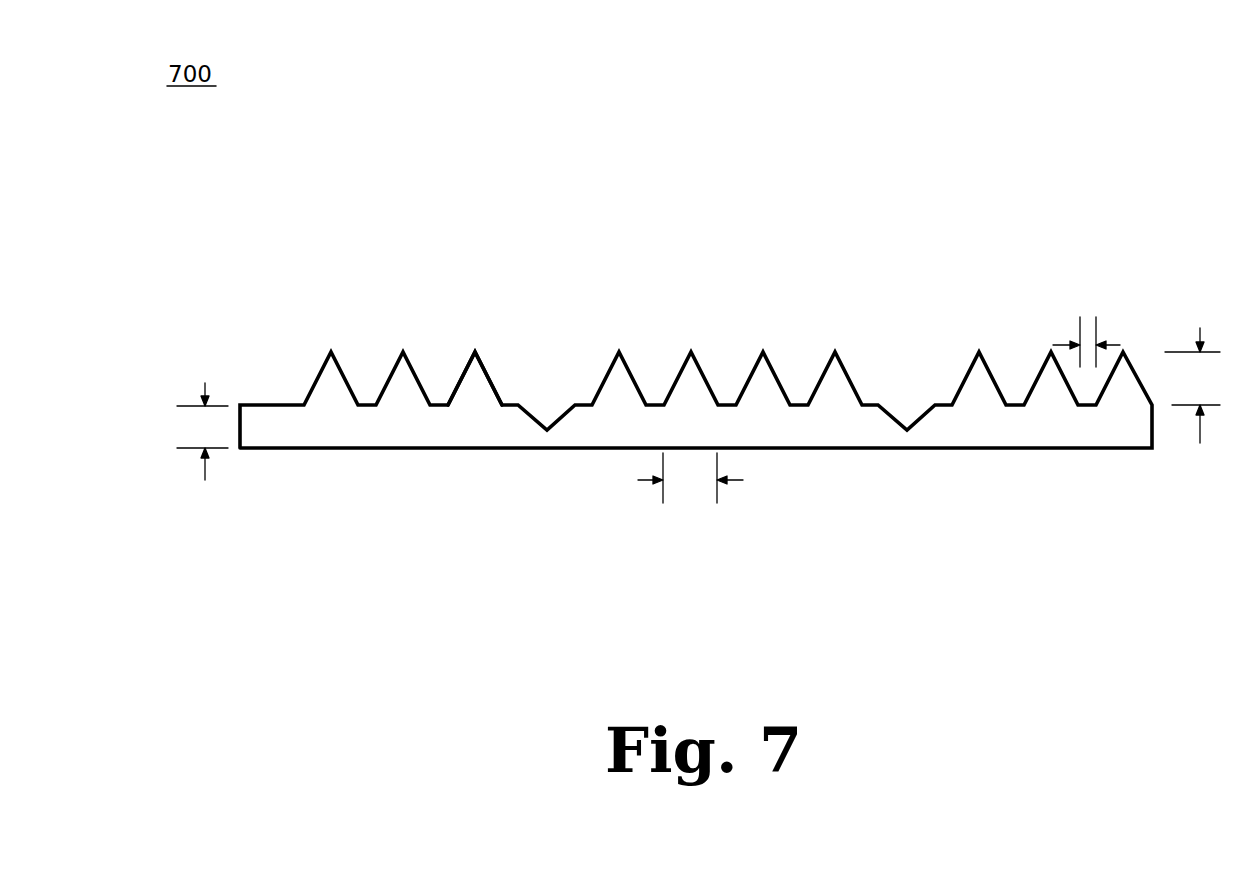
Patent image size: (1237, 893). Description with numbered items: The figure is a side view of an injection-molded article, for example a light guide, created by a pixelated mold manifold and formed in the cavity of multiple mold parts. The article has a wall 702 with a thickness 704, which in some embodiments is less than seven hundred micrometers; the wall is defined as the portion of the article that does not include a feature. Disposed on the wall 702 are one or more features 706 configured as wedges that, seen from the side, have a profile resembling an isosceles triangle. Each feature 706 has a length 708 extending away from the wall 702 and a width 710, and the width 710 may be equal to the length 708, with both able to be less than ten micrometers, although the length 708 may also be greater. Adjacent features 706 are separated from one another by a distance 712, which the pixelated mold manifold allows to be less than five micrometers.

The wall 702 is at (696, 456).
The thickness 704 is at (202, 446).
The feature 706 is at (475, 350).
The length 708 is at (1193, 400).
The width 710 is at (684, 506).
The distance 712 is at (1064, 316).